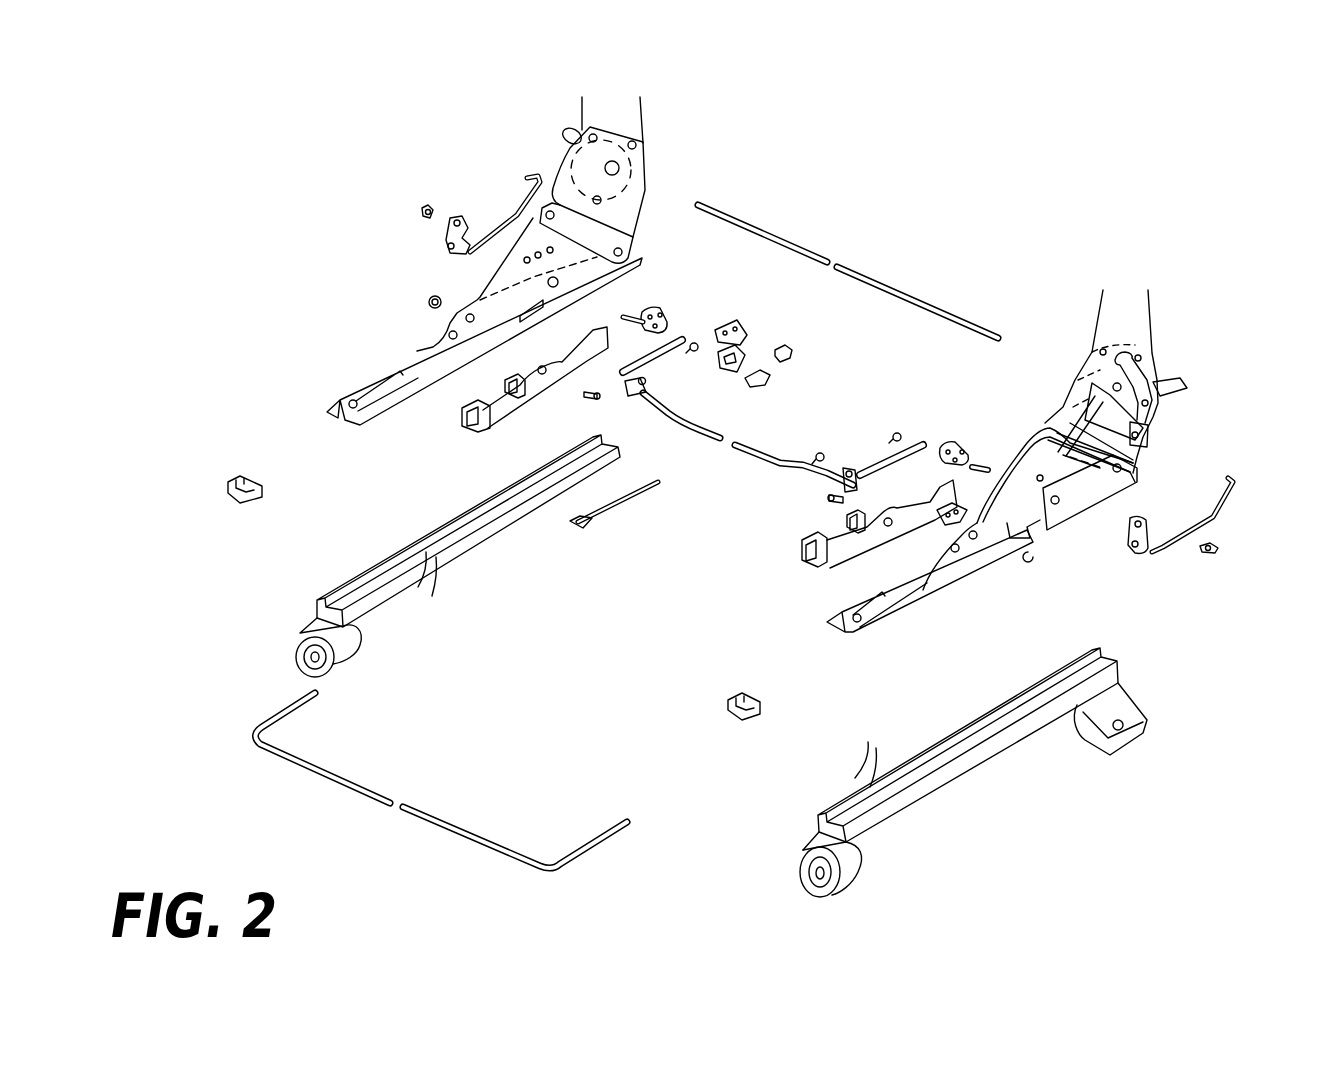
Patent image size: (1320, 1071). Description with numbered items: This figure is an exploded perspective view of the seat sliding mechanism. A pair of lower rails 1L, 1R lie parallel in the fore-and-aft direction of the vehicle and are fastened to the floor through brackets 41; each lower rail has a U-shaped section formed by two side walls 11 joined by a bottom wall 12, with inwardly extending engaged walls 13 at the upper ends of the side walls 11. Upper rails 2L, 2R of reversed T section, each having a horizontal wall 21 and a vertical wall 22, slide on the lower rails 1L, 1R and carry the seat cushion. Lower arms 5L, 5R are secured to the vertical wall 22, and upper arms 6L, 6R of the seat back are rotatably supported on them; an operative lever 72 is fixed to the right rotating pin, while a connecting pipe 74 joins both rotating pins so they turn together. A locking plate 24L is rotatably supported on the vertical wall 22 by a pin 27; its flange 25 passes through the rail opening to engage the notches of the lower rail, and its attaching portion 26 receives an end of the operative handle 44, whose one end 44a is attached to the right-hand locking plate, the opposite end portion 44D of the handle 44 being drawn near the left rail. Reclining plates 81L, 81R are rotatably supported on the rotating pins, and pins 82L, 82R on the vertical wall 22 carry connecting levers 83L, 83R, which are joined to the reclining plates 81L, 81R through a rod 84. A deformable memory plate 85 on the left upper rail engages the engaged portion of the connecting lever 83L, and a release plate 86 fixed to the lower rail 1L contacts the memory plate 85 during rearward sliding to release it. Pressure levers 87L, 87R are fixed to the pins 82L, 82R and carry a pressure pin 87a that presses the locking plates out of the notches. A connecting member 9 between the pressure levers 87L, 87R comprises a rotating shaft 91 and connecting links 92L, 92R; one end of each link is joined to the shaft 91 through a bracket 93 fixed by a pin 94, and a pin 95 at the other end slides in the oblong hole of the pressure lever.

The lower rail 1L is at (468, 537).
The lower rail 1R is at (972, 780).
The upper rail 2L is at (679, 372).
The upper rail 2R is at (1034, 467).
The lower arm 5L is at (637, 247).
The lower arm 5R is at (1147, 445).
The upper arm 6L is at (647, 167).
The upper arm 6R is at (1153, 375).
The connecting member 9 is at (767, 385).
The side wall 11 is at (513, 520).
The bottom wall 12 is at (317, 615).
The engaged wall 13 is at (432, 596).
The horizontal wall 21 is at (345, 420).
The vertical wall 22 is at (500, 290).
The locking plate 24L is at (674, 492).
The flange 25 is at (587, 353).
The attaching portion 26 is at (480, 430).
The pin 27 is at (698, 464).
The bracket 41 is at (352, 632).
The operative handle 44 is at (468, 794).
The release rod end 44D is at (317, 698).
The one end of the operative handle 44a is at (617, 834).
The operative lever 72 is at (1133, 462).
The connecting pipe 74 is at (920, 297).
The reclining plate 81L is at (582, 130).
The reclining plate 81R is at (1150, 320).
The pin 82L is at (422, 203).
The pin 82R is at (1217, 550).
The connecting lever 83L is at (470, 220).
The connecting lever 83R is at (1138, 557).
The rod 84 is at (530, 177).
The memory plate 85 is at (740, 327).
The release plate 86 is at (620, 510).
The pressure lever 87L is at (668, 320).
The pressure lever 87R is at (953, 442).
The pressure pin 87a is at (637, 313).
The rotating shaft 91 is at (700, 432).
The connecting link 92L is at (663, 357).
The connecting link 92R is at (893, 463).
The bracket 93 is at (637, 397).
The pin 94 is at (662, 407).
The pin 95 is at (695, 343).